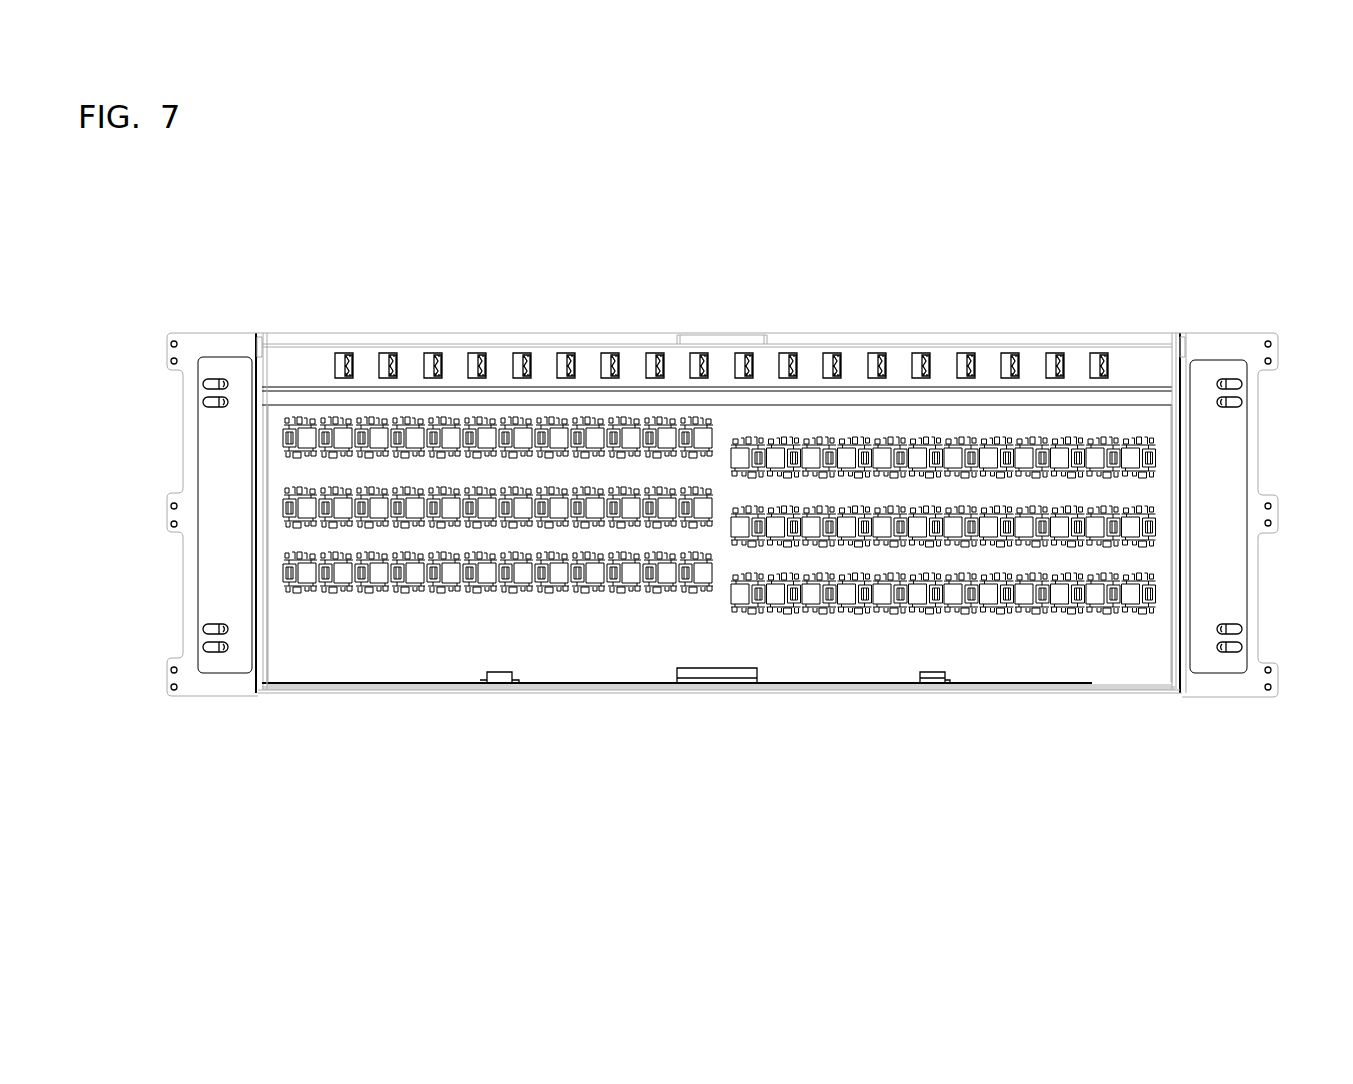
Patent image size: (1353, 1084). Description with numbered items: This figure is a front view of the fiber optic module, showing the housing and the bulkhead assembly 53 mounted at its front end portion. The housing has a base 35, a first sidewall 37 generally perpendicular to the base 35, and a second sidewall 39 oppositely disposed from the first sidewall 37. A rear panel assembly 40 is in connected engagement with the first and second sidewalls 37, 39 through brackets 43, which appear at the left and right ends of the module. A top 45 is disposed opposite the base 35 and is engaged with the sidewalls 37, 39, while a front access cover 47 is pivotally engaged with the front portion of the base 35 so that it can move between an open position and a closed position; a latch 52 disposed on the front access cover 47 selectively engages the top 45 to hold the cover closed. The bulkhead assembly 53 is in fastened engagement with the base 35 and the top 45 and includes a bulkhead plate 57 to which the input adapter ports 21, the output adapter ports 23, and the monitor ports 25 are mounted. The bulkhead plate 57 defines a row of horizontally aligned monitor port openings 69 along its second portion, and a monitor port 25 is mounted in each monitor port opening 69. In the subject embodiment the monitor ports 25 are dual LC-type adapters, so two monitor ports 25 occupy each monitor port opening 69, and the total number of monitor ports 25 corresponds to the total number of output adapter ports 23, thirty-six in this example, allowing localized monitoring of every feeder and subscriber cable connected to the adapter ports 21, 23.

The input adapter ports 21 is at (308, 576).
The output adapter ports 23 is at (1135, 598).
The monitor ports 25 is at (350, 358).
The base 35 is at (798, 691).
The first sidewall 37 is at (258, 467).
The second sidewall 39 is at (1183, 487).
The rear panel assembly 40 is at (1199, 333).
The brackets 43 is at (212, 570).
The top 45 is at (798, 338).
The front access cover 47 is at (285, 687).
The latch 52 is at (755, 676).
The bulkhead assembly 53 is at (362, 663).
The bulkhead plate 57 is at (581, 642).
The monitor port openings 69 is at (1063, 369).